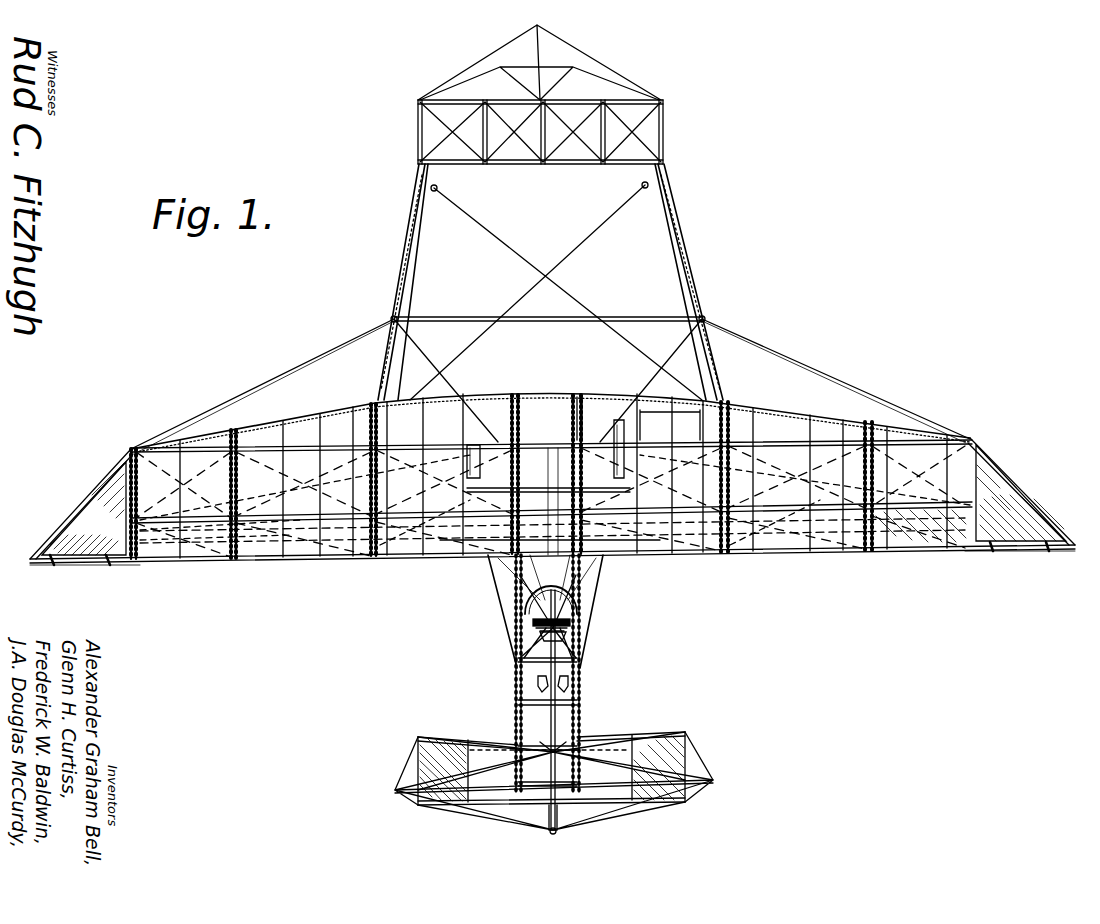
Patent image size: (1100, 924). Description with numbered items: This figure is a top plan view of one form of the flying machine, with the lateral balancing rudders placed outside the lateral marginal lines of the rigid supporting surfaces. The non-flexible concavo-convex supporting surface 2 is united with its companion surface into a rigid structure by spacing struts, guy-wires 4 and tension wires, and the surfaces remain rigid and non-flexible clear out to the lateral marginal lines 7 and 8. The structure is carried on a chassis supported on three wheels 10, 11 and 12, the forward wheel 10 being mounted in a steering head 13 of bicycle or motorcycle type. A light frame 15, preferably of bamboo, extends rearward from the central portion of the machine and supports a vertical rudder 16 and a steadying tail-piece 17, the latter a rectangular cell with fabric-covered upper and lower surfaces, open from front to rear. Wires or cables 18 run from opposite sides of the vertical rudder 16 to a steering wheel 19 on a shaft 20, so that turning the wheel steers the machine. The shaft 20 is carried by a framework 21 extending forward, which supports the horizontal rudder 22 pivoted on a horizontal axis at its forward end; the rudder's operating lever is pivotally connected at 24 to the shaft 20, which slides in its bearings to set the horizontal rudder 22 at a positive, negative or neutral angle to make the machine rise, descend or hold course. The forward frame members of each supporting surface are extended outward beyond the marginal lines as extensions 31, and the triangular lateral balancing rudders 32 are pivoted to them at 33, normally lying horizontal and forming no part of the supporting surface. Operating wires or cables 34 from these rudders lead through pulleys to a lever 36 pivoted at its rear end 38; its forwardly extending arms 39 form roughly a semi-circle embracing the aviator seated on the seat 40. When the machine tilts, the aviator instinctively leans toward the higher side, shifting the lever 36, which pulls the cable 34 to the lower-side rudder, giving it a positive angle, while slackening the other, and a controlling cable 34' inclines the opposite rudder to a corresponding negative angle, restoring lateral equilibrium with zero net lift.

The non-flexible concavo-convex supporting surface 2 is at (762, 420).
The guy-wires 4 is at (890, 440).
The lateral marginal line 7 is at (122, 460).
The lateral marginal line 8 is at (986, 457).
The forward wheel 10 is at (568, 456).
The wheel 11 is at (468, 420).
The wheel 12 is at (656, 405).
The steering head 13 is at (536, 678).
The frame 15 is at (401, 272).
The vertical rudder 16 is at (549, 50).
The steadying tail-piece 17 is at (662, 136).
The wires or cables 18 is at (410, 308).
The steering wheel 19 is at (582, 624).
The shaft 20 is at (556, 737).
The framework 21 is at (518, 721).
The horizontal rudder 22 is at (690, 752).
The pivotal connection 24 is at (548, 830).
The extensions of forward frame members 31 is at (88, 570).
The lateral balancing rudders 32 is at (97, 506).
The pivots 33 is at (52, 565).
The operating wires or cables 34 is at (232, 565).
The controlling wire or cable 34' is at (600, 559).
The lever 36 is at (506, 566).
The pivot or fulcrum 38 is at (580, 396).
The forwardly extending arms 39 is at (572, 598).
The seat 40 is at (536, 619).